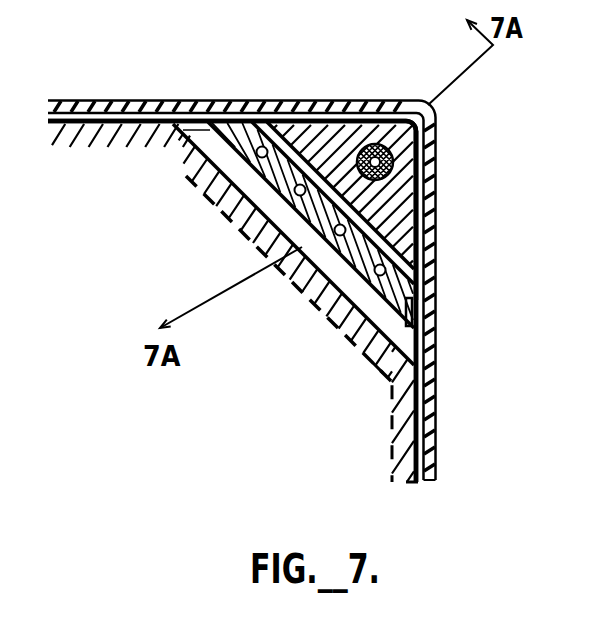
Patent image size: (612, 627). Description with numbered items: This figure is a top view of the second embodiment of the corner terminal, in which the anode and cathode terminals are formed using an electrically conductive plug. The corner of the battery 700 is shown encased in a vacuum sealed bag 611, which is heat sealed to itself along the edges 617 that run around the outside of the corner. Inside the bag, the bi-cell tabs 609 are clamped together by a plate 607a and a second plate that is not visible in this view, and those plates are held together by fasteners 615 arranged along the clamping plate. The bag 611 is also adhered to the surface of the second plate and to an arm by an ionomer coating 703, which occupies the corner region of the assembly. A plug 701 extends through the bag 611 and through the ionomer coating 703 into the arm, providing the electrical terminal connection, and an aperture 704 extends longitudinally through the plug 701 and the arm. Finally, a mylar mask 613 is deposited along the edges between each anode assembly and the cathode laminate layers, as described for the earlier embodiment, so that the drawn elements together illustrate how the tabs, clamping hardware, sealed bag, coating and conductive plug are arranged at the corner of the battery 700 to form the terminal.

The battery 700 is at (291, 443).
The edges 617 is at (143, 100).
The vacuum sealed bag 611 is at (433, 124).
The plug 701 is at (419, 163).
The mylar mask 613 is at (145, 138).
The fasteners 615 is at (362, 346).
The bi-cell tabs 609 is at (418, 348).
The plate 607a is at (419, 300).
The ionomer coating 703 is at (417, 190).
The aperture 704 is at (373, 142).